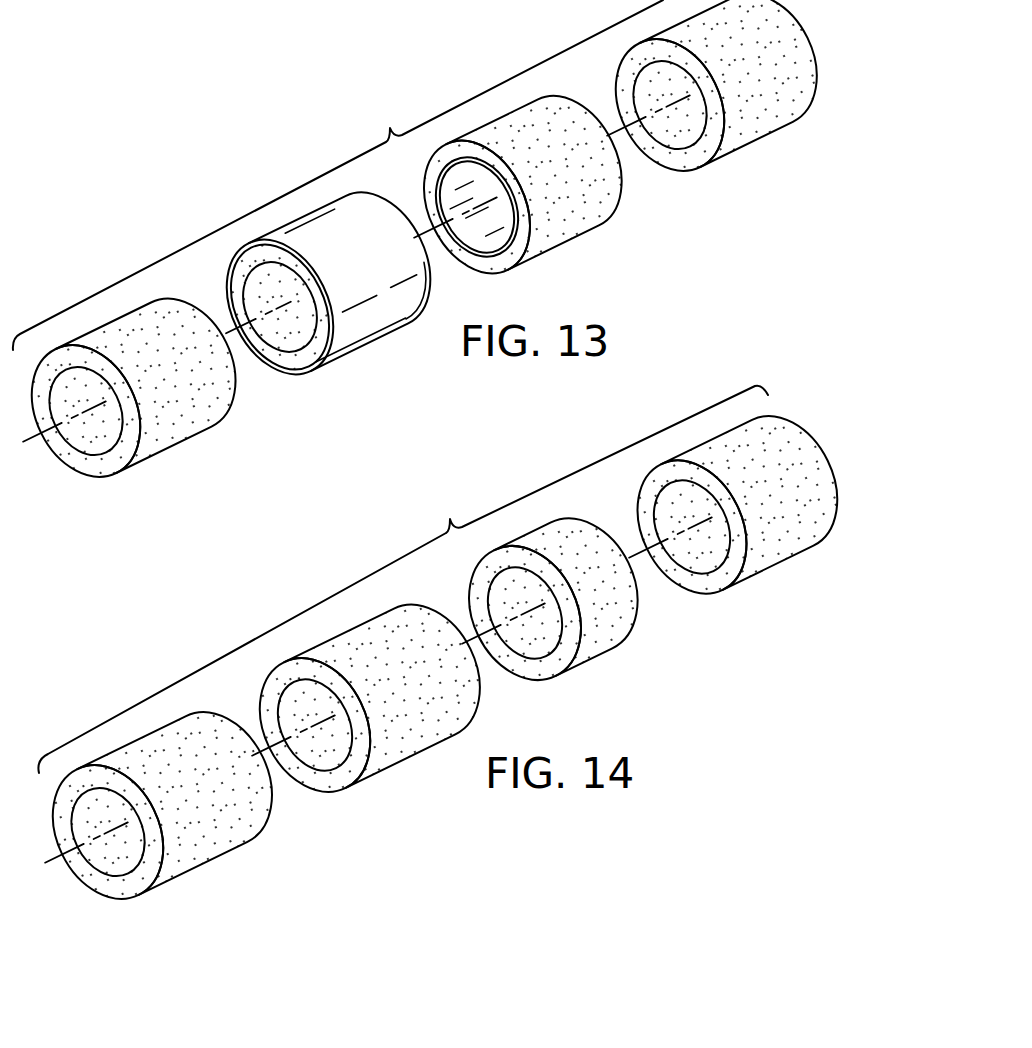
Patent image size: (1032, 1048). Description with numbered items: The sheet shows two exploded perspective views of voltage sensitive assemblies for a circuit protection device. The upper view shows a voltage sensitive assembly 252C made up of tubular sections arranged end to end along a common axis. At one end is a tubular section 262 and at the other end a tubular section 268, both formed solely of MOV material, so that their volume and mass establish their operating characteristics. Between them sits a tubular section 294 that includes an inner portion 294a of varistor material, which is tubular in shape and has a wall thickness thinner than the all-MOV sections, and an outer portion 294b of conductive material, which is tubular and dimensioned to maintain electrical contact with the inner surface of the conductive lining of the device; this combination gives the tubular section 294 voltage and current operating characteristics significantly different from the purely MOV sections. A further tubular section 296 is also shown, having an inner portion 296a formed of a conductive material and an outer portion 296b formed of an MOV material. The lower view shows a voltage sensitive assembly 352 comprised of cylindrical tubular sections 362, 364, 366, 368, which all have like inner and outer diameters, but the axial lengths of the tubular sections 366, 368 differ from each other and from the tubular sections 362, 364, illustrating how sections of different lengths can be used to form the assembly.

In FIG. 13, the voltage sensitive assembly 252C is at (338, 175).
In FIG. 13, the tubular section 262 is at (165, 432).
In FIG. 13, the tubular section 294 is at (323, 301).
In FIG. 13, the inner portion 294a is at (365, 355).
In FIG. 13, the outer portion 294b is at (351, 273).
In FIG. 13, the tubular section 296 is at (518, 189).
In FIG. 13, the inner portion 296a is at (477, 207).
In FIG. 13, the outer portion 296b is at (522, 184).
In FIG. 13, the tubular section 268 is at (753, 120).
In FIG. 14, the voltage sensitive assembly 352 is at (403, 579).
In FIG. 14, the tubular section 362 is at (195, 850).
In FIG. 14, the tubular section 364 is at (395, 750).
In FIG. 14, the tubular section 366 is at (595, 645).
In FIG. 14, the tubular section 368 is at (773, 553).